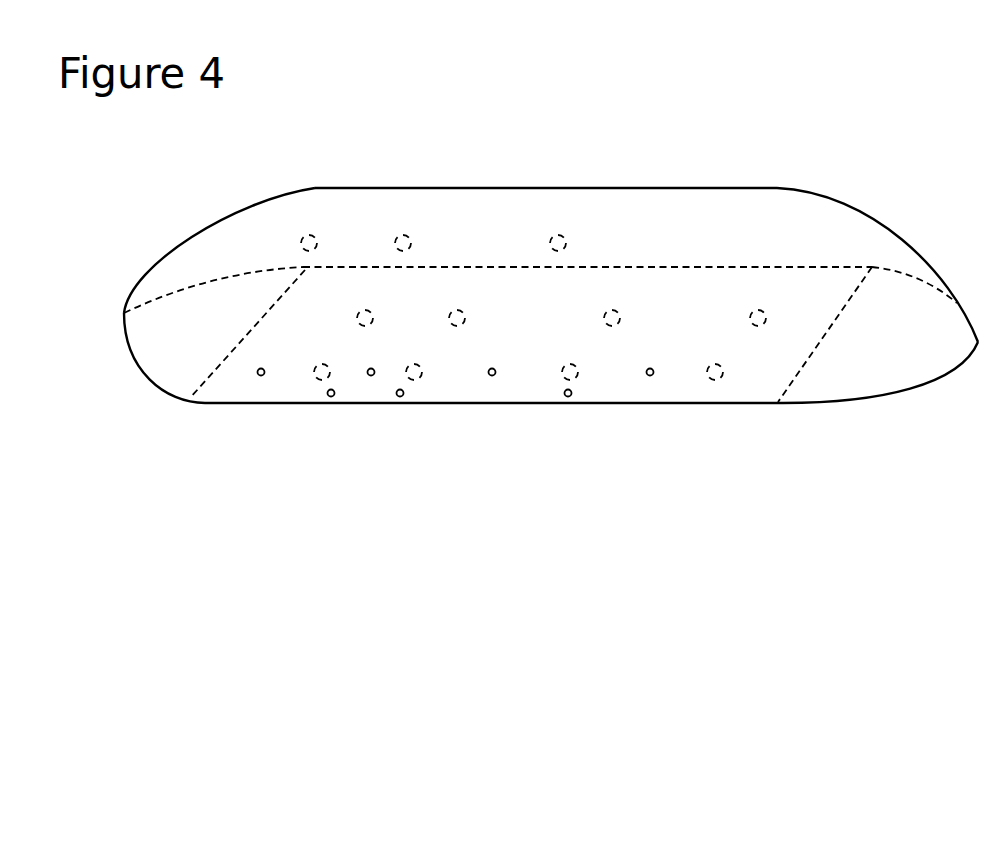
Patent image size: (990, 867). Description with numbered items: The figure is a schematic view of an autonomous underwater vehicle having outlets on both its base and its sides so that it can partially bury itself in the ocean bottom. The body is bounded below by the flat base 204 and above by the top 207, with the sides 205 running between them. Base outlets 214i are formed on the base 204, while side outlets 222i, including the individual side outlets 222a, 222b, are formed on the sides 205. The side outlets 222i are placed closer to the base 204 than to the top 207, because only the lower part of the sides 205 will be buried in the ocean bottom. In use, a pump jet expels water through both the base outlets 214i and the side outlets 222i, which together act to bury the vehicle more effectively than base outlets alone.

The base 204 is at (745, 350).
The sides 205 is at (685, 308).
The top 207 is at (478, 188).
The base outlets 214i is at (713, 381).
The side outlet 222a is at (258, 375).
The side outlet 222b is at (334, 396).
The side outlets 222i is at (309, 234).